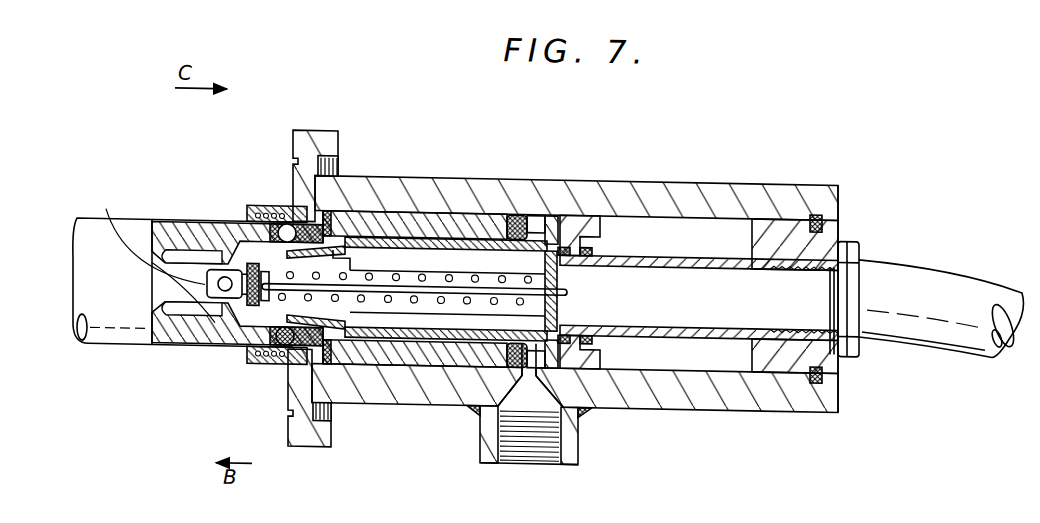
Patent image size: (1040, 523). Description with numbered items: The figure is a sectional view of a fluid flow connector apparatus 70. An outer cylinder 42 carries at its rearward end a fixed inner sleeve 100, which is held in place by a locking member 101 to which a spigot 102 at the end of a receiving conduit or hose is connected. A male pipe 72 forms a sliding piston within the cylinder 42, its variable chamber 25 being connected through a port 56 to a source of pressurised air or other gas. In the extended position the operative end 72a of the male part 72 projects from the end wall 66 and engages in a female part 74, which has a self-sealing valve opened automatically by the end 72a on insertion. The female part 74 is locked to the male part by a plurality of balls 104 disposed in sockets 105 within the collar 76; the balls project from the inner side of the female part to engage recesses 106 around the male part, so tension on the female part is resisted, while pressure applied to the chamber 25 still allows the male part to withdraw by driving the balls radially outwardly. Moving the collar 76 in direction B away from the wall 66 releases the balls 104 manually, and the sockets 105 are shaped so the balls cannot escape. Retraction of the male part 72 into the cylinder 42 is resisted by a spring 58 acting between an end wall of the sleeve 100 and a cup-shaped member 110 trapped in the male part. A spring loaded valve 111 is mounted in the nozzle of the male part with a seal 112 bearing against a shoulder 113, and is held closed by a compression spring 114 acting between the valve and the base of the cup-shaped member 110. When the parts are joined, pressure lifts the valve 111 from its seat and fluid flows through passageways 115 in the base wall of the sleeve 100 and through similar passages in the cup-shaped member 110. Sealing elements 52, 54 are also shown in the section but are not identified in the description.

The variable chamber 25 is at (518, 384).
The outer cylinder 42 is at (440, 179).
The O-ring seal 52 is at (552, 212).
The seal ring 54 is at (515, 212).
The port 56 is at (535, 458).
The spring 58 is at (472, 275).
The end wall 66 is at (302, 131).
The connector apparatus 70 is at (692, 414).
The male pipe 72 is at (385, 236).
The operative end 72a is at (238, 272).
The female part 74 is at (163, 228).
The collar 76 is at (272, 213).
The fixed inner sleeve 100 is at (668, 251).
The locking member 101 is at (845, 223).
The spigot 102 is at (800, 277).
The balls 104 is at (268, 228).
The sockets 105 is at (295, 213).
The recesses 106 is at (280, 326).
The cup-shaped member 110 is at (350, 262).
The spring loaded valve 111 is at (142, 236).
The seal 112 is at (240, 324).
The shoulder 113 is at (152, 296).
The compression spring 114 is at (262, 320).
The passageways 115 is at (556, 268).